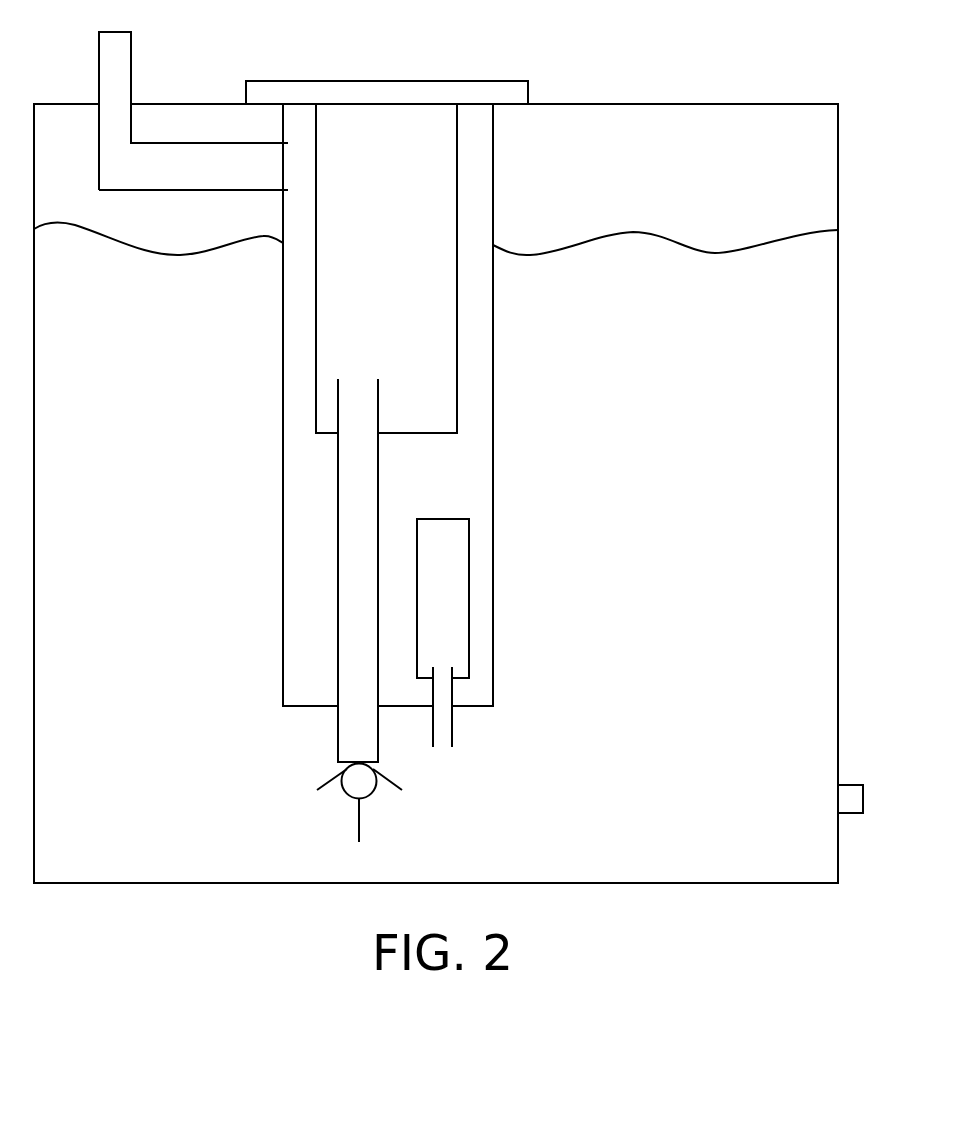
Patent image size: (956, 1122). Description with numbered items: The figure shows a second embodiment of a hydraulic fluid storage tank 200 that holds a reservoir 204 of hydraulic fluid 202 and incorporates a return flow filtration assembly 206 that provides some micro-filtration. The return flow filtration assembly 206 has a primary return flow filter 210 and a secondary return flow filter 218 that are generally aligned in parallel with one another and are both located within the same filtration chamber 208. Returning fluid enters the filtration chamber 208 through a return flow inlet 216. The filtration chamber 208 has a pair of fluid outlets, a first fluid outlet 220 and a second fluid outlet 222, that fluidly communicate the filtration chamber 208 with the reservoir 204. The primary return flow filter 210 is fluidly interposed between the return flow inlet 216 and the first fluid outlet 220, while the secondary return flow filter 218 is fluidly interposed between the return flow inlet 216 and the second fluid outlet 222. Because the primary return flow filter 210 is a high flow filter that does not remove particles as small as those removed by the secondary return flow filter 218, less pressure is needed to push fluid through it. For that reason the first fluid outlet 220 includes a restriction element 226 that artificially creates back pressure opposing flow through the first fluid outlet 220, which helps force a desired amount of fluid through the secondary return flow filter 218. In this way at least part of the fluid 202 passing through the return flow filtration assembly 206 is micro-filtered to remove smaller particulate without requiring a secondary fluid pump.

The hydraulic fluid storage tank 200 is at (777, 85).
The fluid 202 is at (597, 237).
The reservoir 204 is at (720, 552).
The return flow filtration assembly 206 is at (568, 150).
The filtration chamber 208 is at (493, 421).
The primary return flow filter 210 is at (458, 177).
The return flow inlet 216 is at (160, 143).
The secondary return flow filter 218 is at (469, 608).
The first fluid outlet 220 is at (318, 766).
The second fluid outlet 222 is at (443, 757).
The restriction element 226 is at (337, 810).